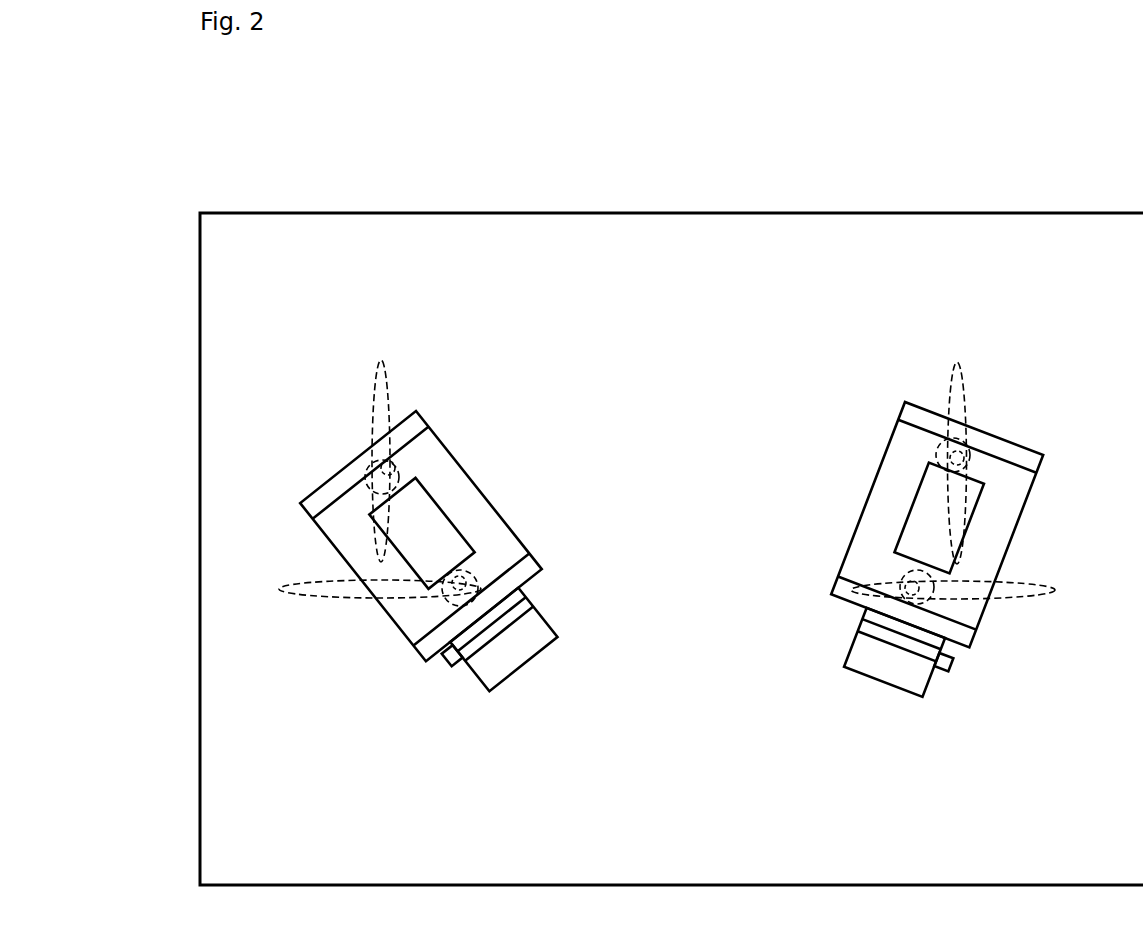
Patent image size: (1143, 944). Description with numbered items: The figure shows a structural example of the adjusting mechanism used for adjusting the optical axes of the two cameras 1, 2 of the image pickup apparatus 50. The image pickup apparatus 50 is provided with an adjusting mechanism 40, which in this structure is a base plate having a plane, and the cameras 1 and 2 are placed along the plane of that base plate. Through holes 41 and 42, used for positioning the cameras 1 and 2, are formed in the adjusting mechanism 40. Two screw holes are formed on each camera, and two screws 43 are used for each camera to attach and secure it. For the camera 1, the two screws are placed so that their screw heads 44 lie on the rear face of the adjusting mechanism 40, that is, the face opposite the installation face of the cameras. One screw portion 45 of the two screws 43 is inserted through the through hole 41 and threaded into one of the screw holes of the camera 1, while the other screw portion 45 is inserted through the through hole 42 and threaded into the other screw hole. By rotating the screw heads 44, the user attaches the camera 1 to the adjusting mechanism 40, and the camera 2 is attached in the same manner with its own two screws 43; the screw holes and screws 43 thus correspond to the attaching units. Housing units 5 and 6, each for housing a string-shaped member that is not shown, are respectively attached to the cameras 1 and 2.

The camera 1 is at (440, 521).
The camera 2 is at (926, 519).
The housing unit 5 is at (463, 532).
The housing unit 6 is at (927, 477).
The adjusting mechanism 40 is at (847, 213).
The through hole 41 is at (387, 362).
The through hole 42 is at (327, 598).
The screw 43 is at (749, 480).
The screw head 44 is at (380, 462).
The screw portion 45 is at (397, 468).
The image pickup apparatus 50 is at (679, 131).